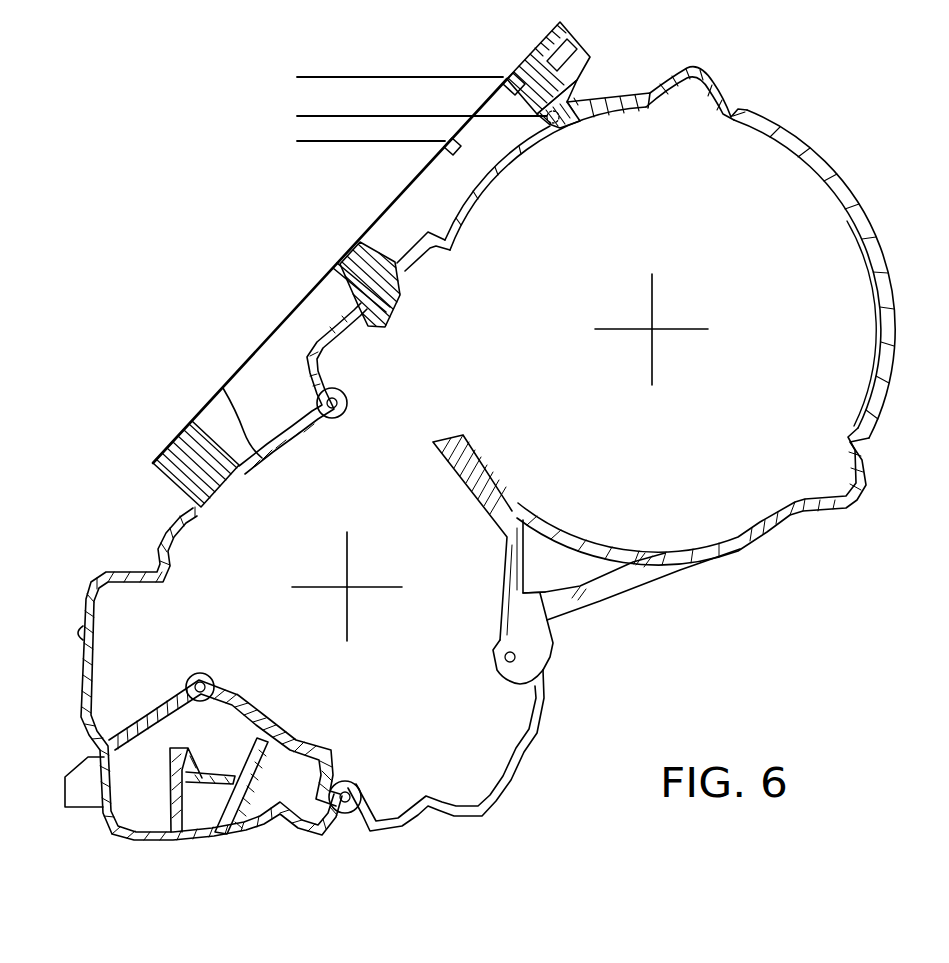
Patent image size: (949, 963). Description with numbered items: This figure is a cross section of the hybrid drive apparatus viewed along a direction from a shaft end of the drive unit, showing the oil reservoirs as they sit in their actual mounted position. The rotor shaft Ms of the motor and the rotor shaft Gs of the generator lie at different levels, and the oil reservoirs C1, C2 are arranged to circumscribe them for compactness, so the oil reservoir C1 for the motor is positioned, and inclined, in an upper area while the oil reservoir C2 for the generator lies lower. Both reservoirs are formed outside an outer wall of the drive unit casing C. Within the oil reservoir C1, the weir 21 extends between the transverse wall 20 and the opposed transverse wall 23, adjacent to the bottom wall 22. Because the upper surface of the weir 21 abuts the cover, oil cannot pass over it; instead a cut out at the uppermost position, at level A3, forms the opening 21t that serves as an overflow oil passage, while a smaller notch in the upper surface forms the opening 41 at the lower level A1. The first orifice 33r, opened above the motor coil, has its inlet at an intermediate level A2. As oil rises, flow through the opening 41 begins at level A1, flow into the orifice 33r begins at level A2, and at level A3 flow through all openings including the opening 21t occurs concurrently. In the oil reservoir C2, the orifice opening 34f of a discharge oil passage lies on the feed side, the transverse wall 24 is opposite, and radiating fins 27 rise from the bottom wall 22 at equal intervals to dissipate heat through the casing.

The weir 21 is at (403, 207).
The opening 21t is at (505, 78).
The transverse wall 23 is at (523, 62).
The bottom wall 22 is at (533, 148).
The first orifice 33r is at (568, 135).
The drive unit casing C is at (609, 99).
The oil reservoir C1 is at (464, 170).
The opening 41 is at (458, 150).
The transverse wall 20 is at (355, 247).
The orifice opening 34f is at (343, 263).
The radiating fins 27 is at (277, 345).
The oil reservoir C2 is at (268, 411).
The transverse wall 24 is at (187, 427).
The level A1 is at (354, 141).
The level A2 is at (405, 111).
The level A3 is at (383, 76).
The rotor shaft Ms is at (652, 329).
The rotor shaft Gs is at (347, 587).